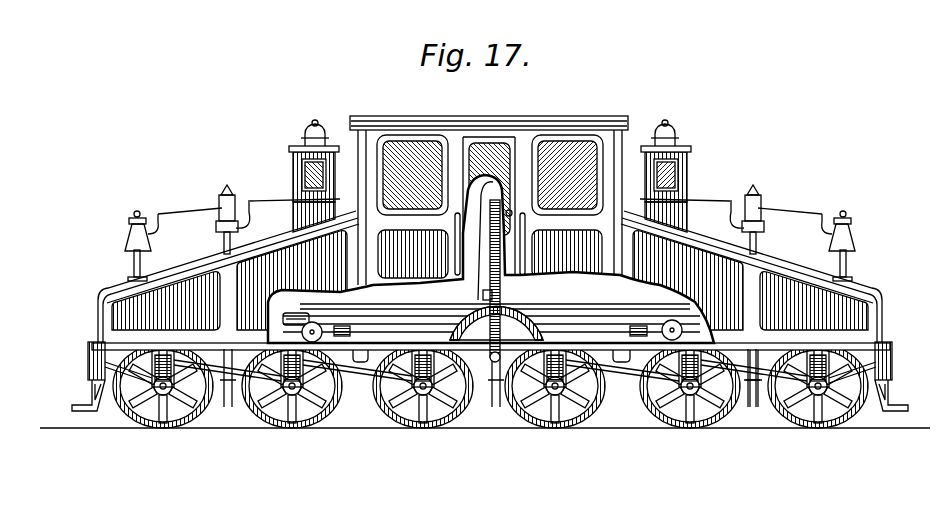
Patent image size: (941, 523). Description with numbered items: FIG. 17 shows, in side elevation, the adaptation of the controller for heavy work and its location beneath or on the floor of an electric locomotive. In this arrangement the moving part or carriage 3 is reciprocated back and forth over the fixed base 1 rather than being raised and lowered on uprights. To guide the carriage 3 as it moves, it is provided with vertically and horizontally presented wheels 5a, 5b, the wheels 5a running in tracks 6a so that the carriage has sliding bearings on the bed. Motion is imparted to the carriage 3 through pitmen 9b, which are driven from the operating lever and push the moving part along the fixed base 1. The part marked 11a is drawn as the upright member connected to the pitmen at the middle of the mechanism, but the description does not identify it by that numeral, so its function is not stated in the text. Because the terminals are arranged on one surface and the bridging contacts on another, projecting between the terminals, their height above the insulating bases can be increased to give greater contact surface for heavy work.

The fixed base 1 is at (381, 322).
The carriage 3 is at (294, 324).
The wheels 5a is at (316, 323).
The horizontally presented wheels 5b is at (343, 327).
The tracks 6a is at (363, 350).
The pitmen 9b is at (424, 308).
The driving lever 11a is at (500, 287).